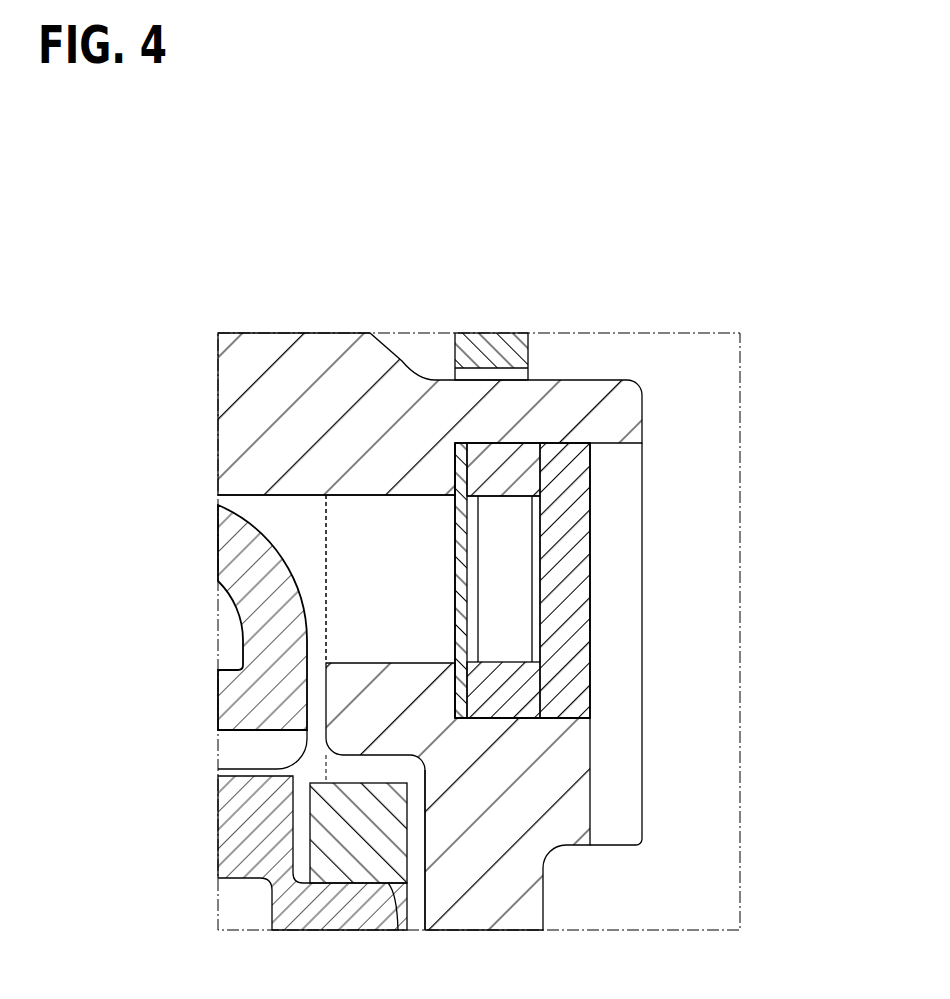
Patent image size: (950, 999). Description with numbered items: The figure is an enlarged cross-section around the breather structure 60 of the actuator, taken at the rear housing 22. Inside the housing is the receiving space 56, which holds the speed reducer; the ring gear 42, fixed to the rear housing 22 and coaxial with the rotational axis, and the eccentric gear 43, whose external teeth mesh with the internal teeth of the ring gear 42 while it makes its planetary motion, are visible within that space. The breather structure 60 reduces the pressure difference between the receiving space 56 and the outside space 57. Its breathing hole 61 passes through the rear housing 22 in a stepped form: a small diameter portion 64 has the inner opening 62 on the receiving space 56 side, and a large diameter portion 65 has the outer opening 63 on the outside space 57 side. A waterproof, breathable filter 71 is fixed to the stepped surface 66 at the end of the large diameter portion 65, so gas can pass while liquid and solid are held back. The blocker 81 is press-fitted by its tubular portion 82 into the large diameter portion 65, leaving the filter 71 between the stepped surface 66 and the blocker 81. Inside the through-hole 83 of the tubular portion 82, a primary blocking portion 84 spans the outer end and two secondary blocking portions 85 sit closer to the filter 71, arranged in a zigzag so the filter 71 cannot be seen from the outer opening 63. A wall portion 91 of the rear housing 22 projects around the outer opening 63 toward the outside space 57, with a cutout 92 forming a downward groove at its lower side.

The rear housing 22 is at (493, 900).
The ring gear 42 is at (240, 706).
The eccentric gear 43 is at (240, 823).
The receiving space 56 is at (278, 531).
The outside space 57 is at (703, 448).
The breather structure 60 is at (592, 718).
The breathing hole 61 is at (542, 449).
The inner opening 62 is at (327, 575).
The outer opening 63 is at (590, 640).
The small diameter portion 64 is at (357, 497).
The large diameter portion 65 is at (543, 713).
The stepped surface 66 is at (470, 452).
The filter 71 is at (455, 613).
The blocker 81 is at (592, 538).
The tubular portion 82 is at (520, 467).
The through-hole 83 is at (457, 493).
The primary blocking portion 84 is at (590, 580).
The secondary blocking portions 85 is at (512, 612).
The wall portion 91 is at (626, 410).
The cutout 92 is at (590, 794).